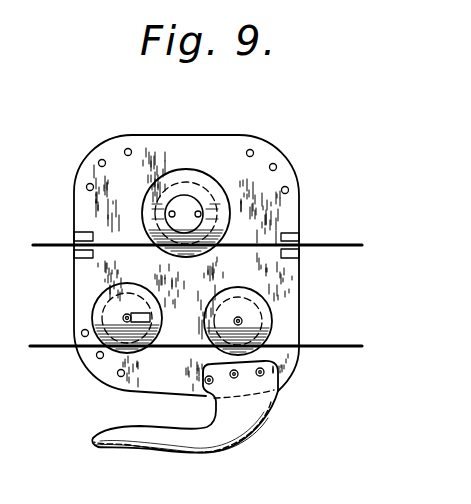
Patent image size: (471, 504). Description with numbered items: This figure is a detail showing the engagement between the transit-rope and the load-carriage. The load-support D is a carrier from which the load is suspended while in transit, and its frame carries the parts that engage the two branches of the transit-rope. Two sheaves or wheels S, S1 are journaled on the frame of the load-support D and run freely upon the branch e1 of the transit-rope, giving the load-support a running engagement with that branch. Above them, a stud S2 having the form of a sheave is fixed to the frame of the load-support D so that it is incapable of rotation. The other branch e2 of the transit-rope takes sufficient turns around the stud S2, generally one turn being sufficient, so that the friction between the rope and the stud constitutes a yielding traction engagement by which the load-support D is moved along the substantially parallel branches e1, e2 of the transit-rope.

The load-support D is at (201, 135).
The stud S2 is at (203, 191).
The sheave S is at (150, 301).
The sheave S1 is at (255, 300).
The branch of the transit-rope e2 is at (212, 244).
The branch of the transit-rope e1 is at (210, 344).